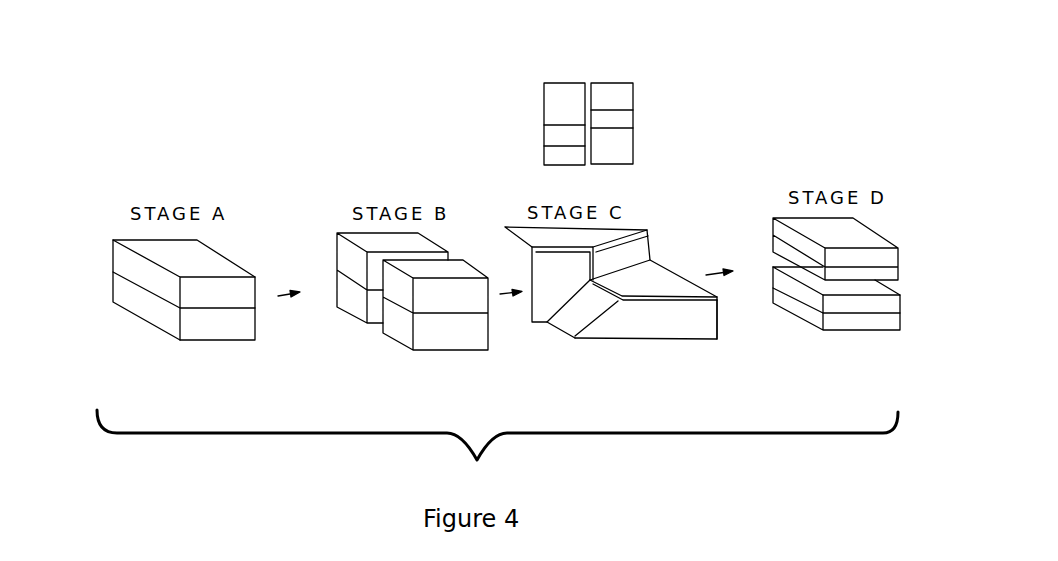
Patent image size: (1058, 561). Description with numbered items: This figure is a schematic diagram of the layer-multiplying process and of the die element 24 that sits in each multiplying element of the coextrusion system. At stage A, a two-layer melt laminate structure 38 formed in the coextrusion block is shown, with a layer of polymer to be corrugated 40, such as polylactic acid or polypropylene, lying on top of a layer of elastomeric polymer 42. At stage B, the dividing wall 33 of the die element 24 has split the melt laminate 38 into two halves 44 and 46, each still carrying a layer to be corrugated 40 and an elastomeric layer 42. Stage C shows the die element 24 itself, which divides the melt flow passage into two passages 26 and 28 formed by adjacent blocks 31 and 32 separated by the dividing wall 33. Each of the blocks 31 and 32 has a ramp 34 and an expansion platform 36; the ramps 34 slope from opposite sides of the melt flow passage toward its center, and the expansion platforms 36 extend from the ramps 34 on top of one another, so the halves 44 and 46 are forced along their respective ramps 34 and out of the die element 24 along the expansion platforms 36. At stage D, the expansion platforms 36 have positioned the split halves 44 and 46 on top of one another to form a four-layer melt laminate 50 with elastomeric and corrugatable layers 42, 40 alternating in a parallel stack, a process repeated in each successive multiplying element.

The die element 24 is at (648, 340).
The passage 26 is at (607, 264).
The passage 28 is at (516, 315).
The block 31 is at (697, 324).
The block 32 is at (650, 240).
The dividing wall 33 is at (532, 270).
The ramp 34 is at (550, 105).
The expansion platform 36 is at (613, 236).
The two-layer melt laminate structure 38 is at (239, 352).
The layer of polymer to be corrugated 40 is at (140, 310).
The layer of elastomeric polymer 42 is at (113, 257).
The half 44 is at (337, 240).
The half 46 is at (397, 333).
The four-layer melt laminate 50 is at (914, 328).